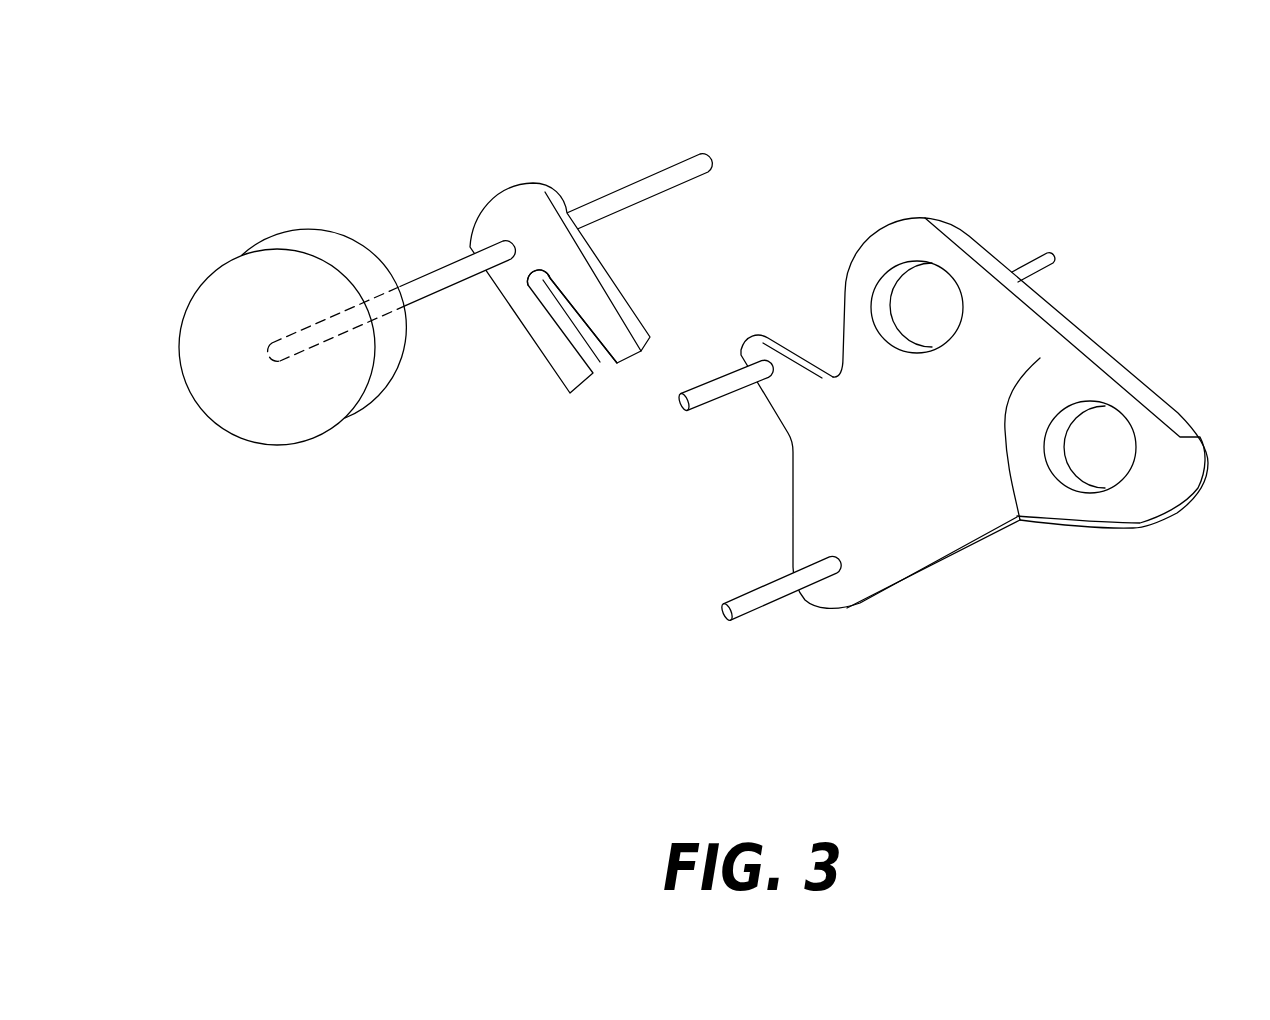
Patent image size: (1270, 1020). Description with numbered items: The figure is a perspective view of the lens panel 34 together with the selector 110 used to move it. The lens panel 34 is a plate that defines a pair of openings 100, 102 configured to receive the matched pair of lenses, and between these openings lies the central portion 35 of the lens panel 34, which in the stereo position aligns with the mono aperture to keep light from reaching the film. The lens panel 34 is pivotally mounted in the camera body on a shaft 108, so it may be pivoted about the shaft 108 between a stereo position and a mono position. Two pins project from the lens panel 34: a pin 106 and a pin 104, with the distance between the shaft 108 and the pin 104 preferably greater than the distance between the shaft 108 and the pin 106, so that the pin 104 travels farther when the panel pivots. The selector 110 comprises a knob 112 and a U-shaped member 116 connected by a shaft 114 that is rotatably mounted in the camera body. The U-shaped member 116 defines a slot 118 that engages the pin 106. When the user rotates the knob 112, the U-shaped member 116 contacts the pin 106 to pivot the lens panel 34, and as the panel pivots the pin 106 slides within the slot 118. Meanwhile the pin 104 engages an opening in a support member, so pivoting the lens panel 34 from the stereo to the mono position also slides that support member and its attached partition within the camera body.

The lens panel 34 is at (1002, 379).
The central portion 35 is at (1020, 520).
The opening 100 is at (930, 298).
The opening 102 is at (1102, 448).
The pin 104 is at (1083, 228).
The pin 106 is at (680, 404).
The shaft 108 is at (725, 616).
The selector 110 is at (347, 323).
The knob 112 is at (283, 432).
The shaft 114 is at (438, 282).
The U-shaped member 116 is at (591, 285).
The slot 118 is at (594, 352).